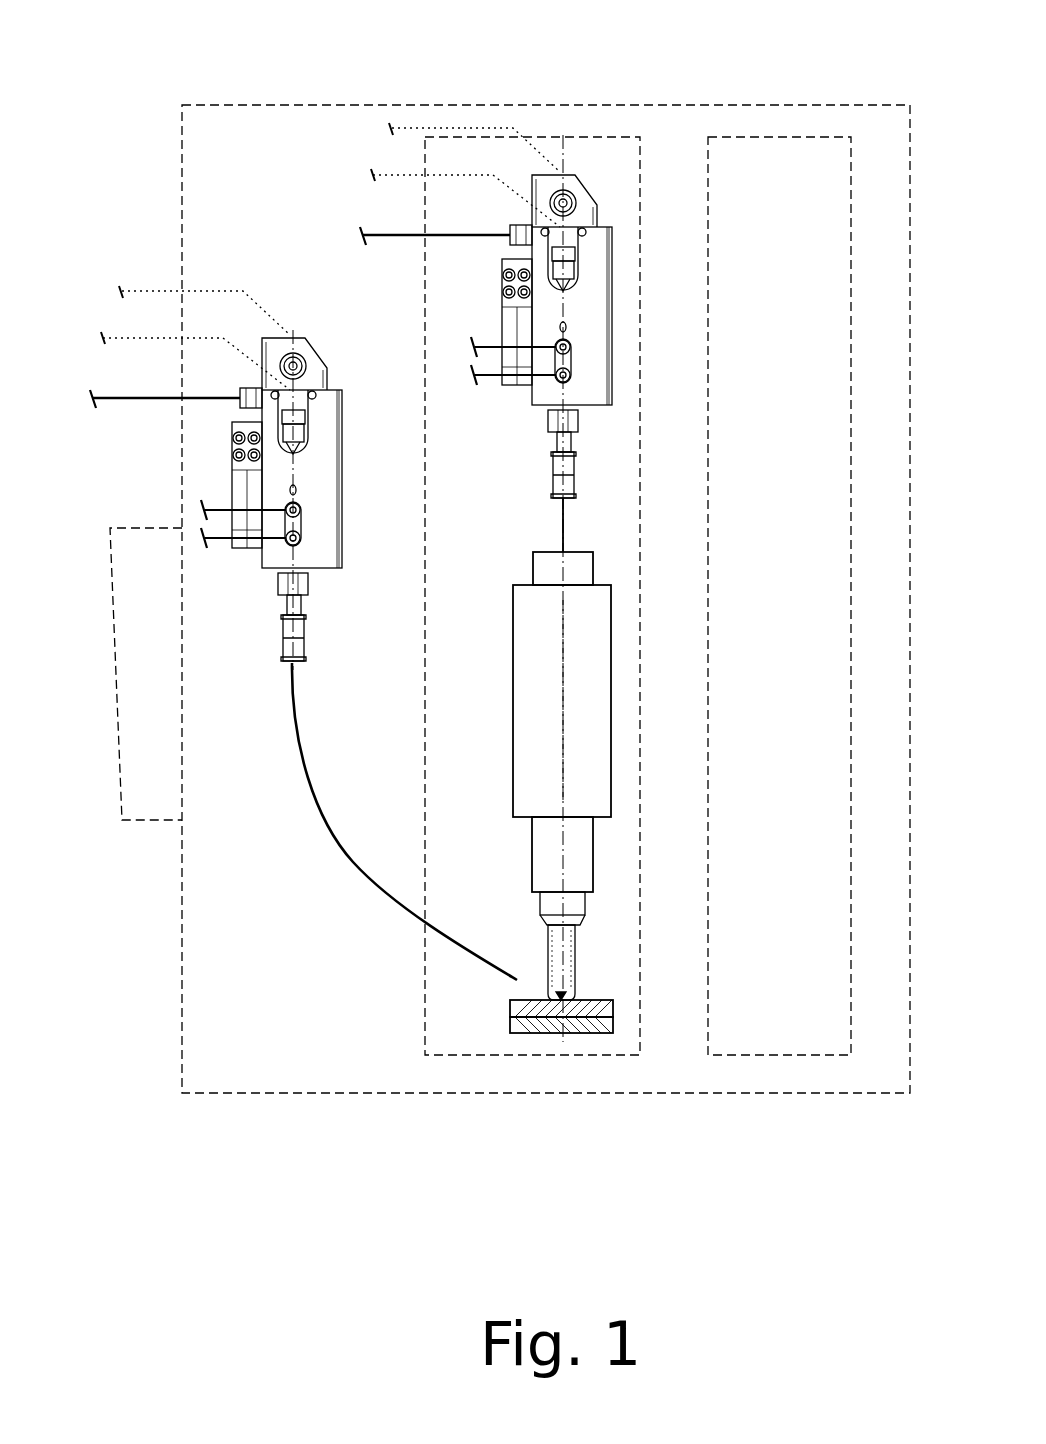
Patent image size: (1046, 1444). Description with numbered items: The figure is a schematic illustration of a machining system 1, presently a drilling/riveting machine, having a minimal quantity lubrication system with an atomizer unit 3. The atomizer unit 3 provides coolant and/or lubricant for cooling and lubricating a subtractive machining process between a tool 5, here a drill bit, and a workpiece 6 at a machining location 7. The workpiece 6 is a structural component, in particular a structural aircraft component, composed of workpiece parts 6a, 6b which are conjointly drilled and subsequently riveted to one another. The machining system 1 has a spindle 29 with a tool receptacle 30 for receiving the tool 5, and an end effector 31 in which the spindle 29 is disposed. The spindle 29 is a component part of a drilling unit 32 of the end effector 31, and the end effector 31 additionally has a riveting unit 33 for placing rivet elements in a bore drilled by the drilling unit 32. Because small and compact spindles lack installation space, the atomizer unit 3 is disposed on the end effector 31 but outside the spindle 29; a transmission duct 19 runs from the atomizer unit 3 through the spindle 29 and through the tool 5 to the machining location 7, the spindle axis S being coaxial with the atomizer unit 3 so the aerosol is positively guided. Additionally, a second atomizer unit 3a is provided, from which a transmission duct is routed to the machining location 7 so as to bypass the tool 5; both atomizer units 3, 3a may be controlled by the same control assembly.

The machining system 1 is at (208, 82).
The atomizer unit 3 is at (610, 206).
The atomizer unit 3a is at (325, 333).
The tool 5 is at (553, 940).
The workpiece 6 is at (505, 1001).
The workpiece part 6a is at (613, 1010).
The workpiece part 6b is at (613, 1025).
The machining location 7 is at (528, 996).
The transmission duct 19 is at (563, 535).
The spindle 29 is at (620, 642).
The tool receptacle 30 is at (593, 855).
The spindle axis S is at (563, 715).
The end effector 31 is at (815, 105).
The drilling unit 32 is at (468, 137).
The riveting unit 33 is at (742, 137).